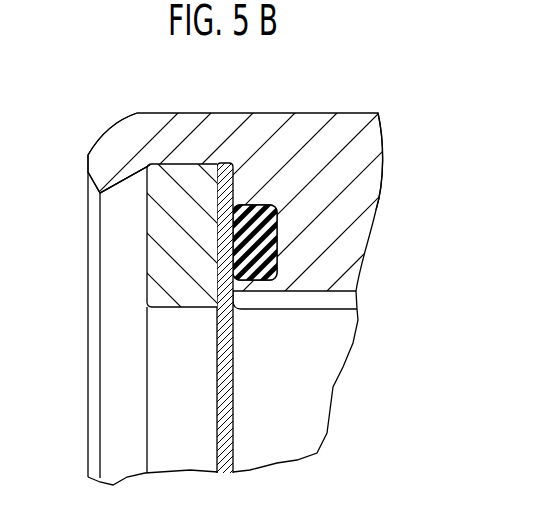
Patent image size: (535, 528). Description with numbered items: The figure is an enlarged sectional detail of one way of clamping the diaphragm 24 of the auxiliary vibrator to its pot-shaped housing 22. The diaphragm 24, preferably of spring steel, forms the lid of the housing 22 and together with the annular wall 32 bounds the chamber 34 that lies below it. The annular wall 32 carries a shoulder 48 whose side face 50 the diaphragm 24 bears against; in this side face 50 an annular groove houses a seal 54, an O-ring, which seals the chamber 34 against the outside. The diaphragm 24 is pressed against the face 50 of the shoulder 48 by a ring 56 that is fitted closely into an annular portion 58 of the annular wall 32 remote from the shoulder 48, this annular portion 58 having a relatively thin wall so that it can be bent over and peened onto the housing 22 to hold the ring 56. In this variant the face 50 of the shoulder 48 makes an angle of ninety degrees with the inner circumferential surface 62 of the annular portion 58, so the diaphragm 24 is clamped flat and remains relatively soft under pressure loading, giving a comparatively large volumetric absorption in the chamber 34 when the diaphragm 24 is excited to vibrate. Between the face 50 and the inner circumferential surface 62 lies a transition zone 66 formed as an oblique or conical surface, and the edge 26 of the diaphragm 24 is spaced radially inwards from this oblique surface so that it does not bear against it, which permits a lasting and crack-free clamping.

The housing 22 is at (383, 193).
The annular portion 58 is at (132, 138).
The annular wall 32 is at (347, 135).
The edge 26 is at (356, 291).
The shoulder 48 is at (245, 300).
The chamber 34 is at (263, 407).
The seal 54 is at (257, 204).
The side face 50 is at (236, 204).
The transition zone 66 is at (225, 164).
The ring 56 is at (160, 252).
The inner circumferential surface 62 is at (178, 166).
The diaphragm 24 is at (217, 413).